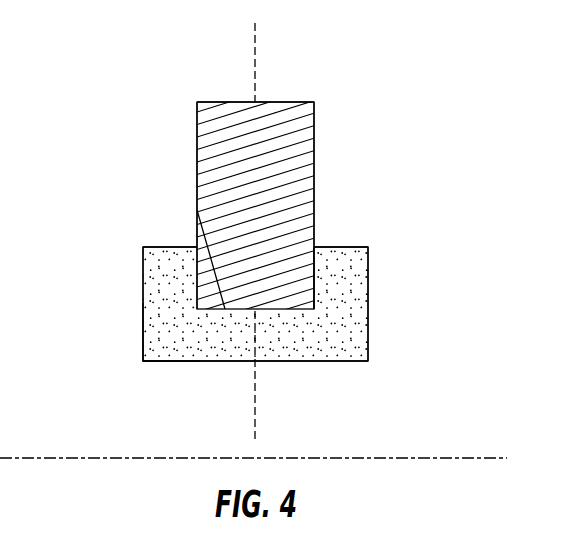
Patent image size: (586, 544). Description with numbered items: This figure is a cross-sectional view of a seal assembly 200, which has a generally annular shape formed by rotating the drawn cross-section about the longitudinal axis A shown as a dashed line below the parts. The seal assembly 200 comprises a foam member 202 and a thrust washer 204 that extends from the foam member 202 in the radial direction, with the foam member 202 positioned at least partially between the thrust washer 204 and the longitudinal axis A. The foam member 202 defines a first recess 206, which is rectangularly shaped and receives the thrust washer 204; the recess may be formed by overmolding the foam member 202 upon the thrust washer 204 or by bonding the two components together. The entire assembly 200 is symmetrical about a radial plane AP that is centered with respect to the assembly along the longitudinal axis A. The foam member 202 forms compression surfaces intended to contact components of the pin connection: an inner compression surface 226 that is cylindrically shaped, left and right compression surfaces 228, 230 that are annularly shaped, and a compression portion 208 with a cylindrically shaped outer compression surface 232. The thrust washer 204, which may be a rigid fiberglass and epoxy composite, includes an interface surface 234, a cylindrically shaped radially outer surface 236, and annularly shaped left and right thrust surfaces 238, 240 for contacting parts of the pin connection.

The seal assembly 200 is at (347, 57).
The foam member 202 is at (357, 338).
The thrust washer 204 is at (302, 167).
The first recess 206 is at (316, 275).
The compression portion 208 is at (152, 338).
The inner compression surface 226 is at (320, 362).
The left compression surface 228 is at (143, 303).
The right compression surface 230 is at (368, 302).
The outer compression surface 232 is at (169, 247).
The interface surface 234 is at (197, 210).
The radially outer surface 236 is at (283, 102).
The left thrust surface 238 is at (197, 125).
The right thrust surface 240 is at (315, 125).
The radial plane AP is at (256, 38).
The longitudinal axis A is at (128, 458).